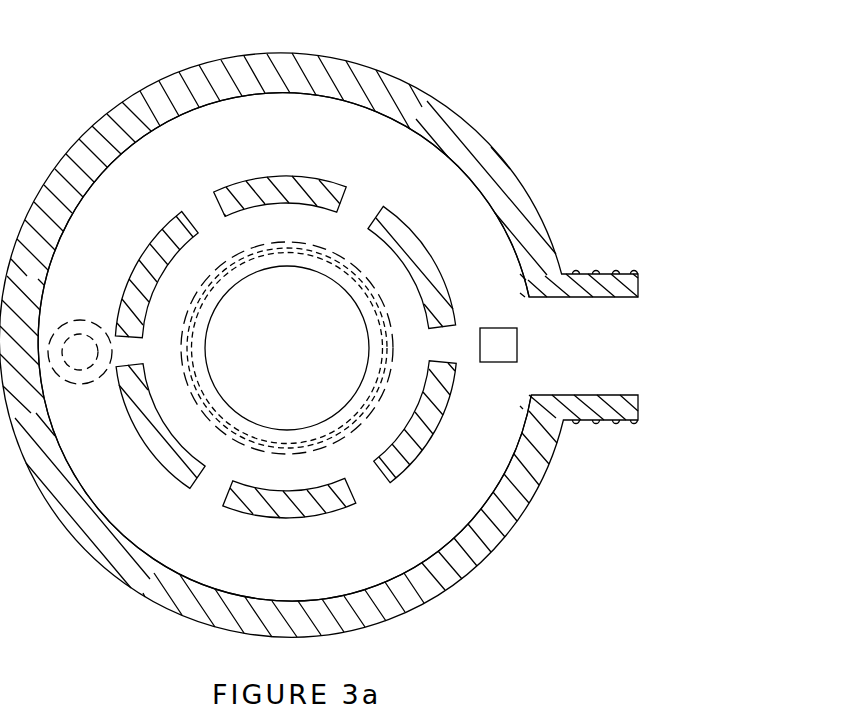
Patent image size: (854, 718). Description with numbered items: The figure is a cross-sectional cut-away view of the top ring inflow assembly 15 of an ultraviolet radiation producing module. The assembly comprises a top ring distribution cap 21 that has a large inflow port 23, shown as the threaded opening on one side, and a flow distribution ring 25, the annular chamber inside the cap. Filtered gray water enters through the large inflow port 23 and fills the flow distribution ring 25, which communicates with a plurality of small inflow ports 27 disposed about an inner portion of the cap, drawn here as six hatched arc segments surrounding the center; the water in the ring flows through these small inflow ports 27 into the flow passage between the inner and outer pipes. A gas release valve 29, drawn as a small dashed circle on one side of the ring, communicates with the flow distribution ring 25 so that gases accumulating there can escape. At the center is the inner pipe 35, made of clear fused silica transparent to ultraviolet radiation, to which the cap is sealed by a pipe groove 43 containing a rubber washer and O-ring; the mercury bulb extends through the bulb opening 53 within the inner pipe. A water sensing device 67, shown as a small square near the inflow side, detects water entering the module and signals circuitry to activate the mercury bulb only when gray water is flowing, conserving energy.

The top ring inflow assembly 15 is at (385, 318).
The top ring distribution cap 21 is at (328, 56).
The large inflow port 23 is at (638, 352).
The flow distribution ring 25 is at (284, 347).
The small inflow ports 27 is at (205, 215).
The gas release valve 29 is at (80, 388).
The inner pipe 35 is at (190, 347).
The pipe groove 43 is at (225, 257).
The bulb opening 53 is at (367, 337).
The water sensing device 67 is at (505, 363).